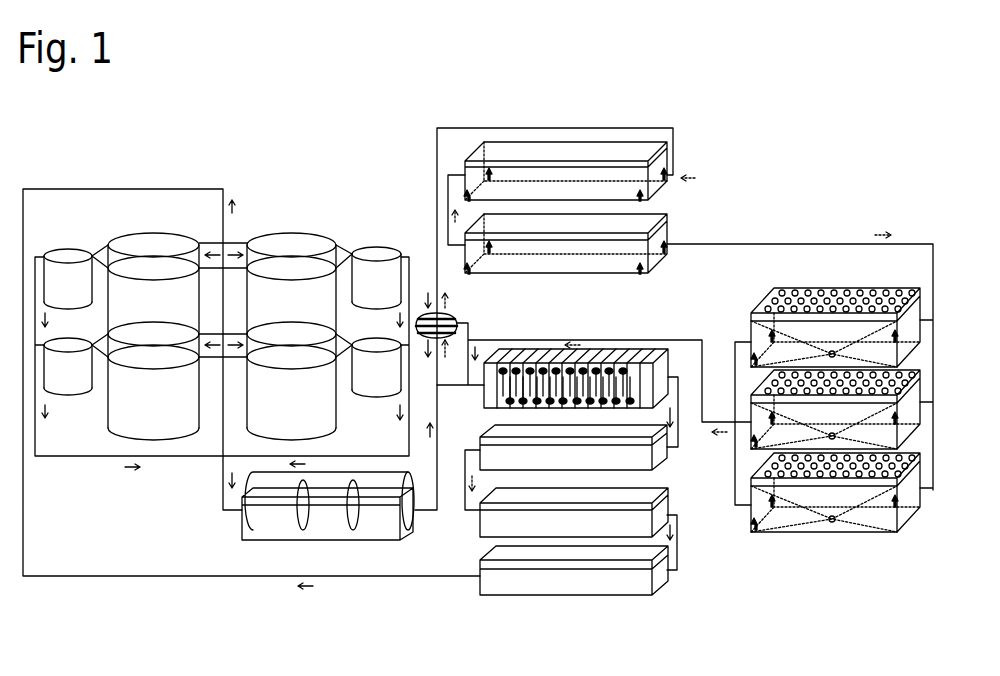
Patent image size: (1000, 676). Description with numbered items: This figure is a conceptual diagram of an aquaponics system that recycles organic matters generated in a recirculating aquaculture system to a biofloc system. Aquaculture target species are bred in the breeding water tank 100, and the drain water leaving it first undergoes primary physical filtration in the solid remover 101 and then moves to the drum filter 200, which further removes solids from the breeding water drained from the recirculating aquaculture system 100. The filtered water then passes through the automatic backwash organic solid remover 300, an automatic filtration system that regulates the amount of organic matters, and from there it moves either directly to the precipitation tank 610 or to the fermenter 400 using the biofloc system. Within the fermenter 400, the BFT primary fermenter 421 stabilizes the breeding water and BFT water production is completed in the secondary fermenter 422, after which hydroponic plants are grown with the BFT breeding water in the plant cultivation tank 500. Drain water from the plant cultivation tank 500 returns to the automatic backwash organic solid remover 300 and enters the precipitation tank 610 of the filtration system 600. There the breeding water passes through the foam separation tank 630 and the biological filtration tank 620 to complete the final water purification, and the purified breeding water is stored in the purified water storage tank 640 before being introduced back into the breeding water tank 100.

The breeding water tank 100 is at (317, 231).
The solid remover 101 is at (373, 250).
The drum filter 200 is at (247, 515).
The automatic backwash organic solid remover 300 is at (452, 316).
The fermenter 400 is at (637, 208).
The BFT primary fermenter 421 is at (668, 185).
The secondary fermenter 422 is at (668, 243).
The plant cultivation tank 500 is at (805, 527).
The filtration system 600 is at (603, 471).
The precipitation tank 610 is at (663, 346).
The biological filtration tank 620 is at (664, 492).
The foam separation tank 630 is at (656, 456).
The purified water storage tank 640 is at (664, 570).